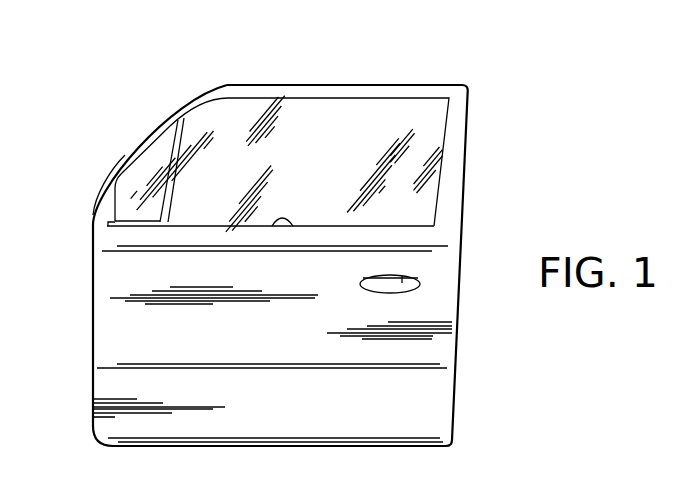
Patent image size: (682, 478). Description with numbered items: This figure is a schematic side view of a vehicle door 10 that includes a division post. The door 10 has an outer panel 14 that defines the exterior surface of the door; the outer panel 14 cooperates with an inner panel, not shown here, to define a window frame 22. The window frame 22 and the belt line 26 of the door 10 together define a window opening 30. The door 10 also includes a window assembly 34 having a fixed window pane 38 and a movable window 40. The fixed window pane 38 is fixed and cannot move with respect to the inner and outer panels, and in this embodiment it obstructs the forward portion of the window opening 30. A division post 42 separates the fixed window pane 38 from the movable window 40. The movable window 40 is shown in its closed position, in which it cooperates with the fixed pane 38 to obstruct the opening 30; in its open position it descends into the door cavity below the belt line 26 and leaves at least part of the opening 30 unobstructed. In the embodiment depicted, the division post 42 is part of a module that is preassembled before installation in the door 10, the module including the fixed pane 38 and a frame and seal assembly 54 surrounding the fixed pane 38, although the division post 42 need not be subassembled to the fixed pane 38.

The vehicle door 10 is at (525, 91).
The outer panel 14 is at (452, 397).
The window frame 22 is at (158, 123).
The belt line 26 is at (290, 228).
The window opening 30 is at (138, 170).
The window assembly 34 is at (111, 177).
The fixed window pane 38 is at (135, 212).
The movable window 40 is at (408, 204).
The division post 42 is at (178, 142).
The frame and seal assembly 54 is at (108, 222).